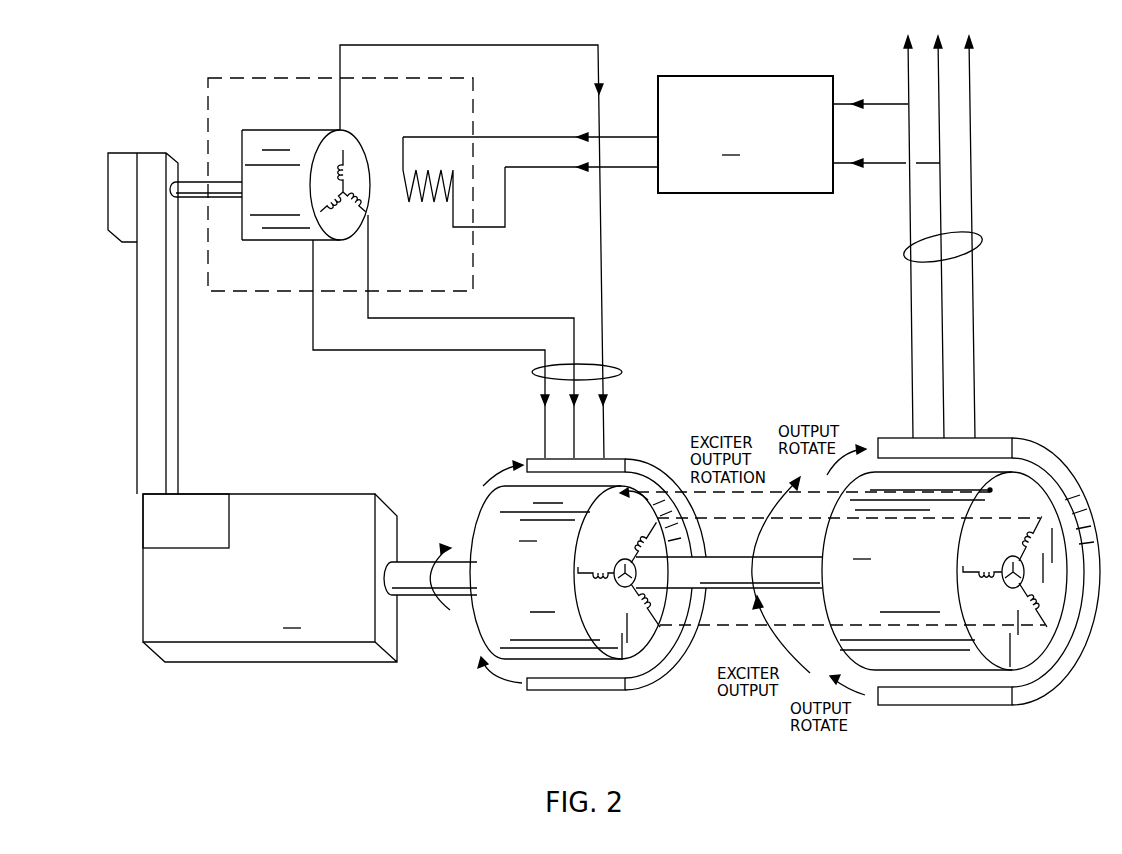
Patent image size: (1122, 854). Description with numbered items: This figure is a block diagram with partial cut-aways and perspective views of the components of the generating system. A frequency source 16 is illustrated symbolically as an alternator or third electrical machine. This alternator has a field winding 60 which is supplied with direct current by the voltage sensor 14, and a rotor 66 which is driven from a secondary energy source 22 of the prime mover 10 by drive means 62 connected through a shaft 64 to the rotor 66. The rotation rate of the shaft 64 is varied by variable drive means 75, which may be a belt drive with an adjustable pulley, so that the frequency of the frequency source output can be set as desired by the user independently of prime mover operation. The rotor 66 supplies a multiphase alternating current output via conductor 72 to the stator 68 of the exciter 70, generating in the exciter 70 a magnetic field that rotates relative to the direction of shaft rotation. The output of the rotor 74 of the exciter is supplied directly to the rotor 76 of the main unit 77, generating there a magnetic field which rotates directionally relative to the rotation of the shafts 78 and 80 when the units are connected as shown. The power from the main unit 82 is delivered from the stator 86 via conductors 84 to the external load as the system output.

The prime mover 10 is at (270, 578).
The voltage sensor 14 is at (799, 134).
The frequency source 16 is at (290, 78).
The secondary energy source 22 is at (143, 524).
The field winding 60 is at (427, 210).
The drive means 62 is at (180, 323).
The shaft 64 is at (216, 196).
The rotor 66 is at (245, 163).
The stator 68 is at (636, 690).
The exciter 70 is at (559, 595).
The conductor 72 is at (616, 372).
The rotor 74 is at (569, 573).
The variable drive means 75 is at (108, 226).
The rotor 76 is at (944, 571).
The main unit 77 is at (961, 575).
The shaft 78 is at (710, 592).
The shaft 80 is at (472, 560).
The main unit 82 is at (1004, 705).
The conductors 84 is at (981, 239).
The stator 86 is at (992, 438).